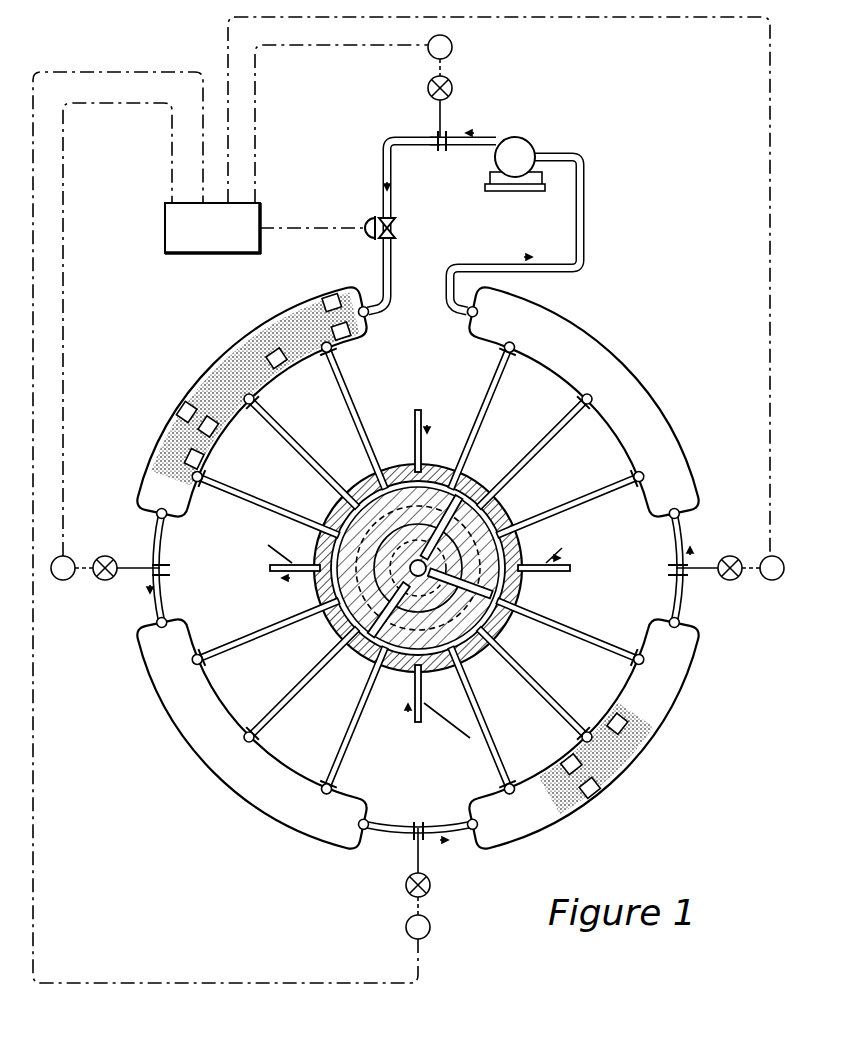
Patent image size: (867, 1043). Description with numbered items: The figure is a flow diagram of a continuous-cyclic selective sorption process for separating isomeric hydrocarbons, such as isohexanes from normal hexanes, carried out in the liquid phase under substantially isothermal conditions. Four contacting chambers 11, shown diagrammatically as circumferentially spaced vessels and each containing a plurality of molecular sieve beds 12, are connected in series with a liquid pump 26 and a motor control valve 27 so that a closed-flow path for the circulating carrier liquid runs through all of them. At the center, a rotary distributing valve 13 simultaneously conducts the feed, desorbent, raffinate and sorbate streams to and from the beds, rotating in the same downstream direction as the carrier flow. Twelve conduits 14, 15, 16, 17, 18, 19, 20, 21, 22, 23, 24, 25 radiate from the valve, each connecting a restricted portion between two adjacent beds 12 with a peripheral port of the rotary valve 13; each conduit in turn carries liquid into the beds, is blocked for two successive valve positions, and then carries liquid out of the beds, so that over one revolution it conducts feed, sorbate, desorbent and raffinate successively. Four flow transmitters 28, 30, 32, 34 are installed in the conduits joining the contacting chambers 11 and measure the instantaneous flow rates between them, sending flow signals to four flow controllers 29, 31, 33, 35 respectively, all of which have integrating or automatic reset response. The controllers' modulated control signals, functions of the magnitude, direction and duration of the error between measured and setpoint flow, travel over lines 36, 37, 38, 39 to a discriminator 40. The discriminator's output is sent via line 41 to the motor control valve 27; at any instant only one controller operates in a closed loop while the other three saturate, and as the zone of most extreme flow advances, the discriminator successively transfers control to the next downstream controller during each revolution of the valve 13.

The contacting chamber 11 is at (417, 568).
The molecular sieve bed 12 is at (418, 553).
The rotary distributing valve 13 is at (411, 572).
The conduit 14 is at (354, 415).
The conduit 15 is at (301, 451).
The conduit 16 is at (265, 504).
The conduit 17 is at (265, 631).
The conduit 18 is at (301, 684).
The conduit 19 is at (350, 720).
The conduit 20 is at (494, 720).
The conduit 21 is at (536, 684).
The conduit 22 is at (570, 631).
The conduit 23 is at (570, 503).
The conduit 24 is at (534, 451).
The conduit 25 is at (480, 415).
The liquid pump 26 is at (482, 212).
The motor control valve 27 is at (385, 226).
The flow transmitter 28 is at (465, 99).
The flow controller 29 is at (463, 51).
The flow transmitter 30 is at (111, 583).
The flow controller 31 is at (86, 552).
The flow transmitter 32 is at (395, 869).
The flow controller 33 is at (440, 930).
The flow transmitter 34 is at (725, 585).
The flow controller 35 is at (756, 550).
The line 36 is at (341, 124).
The line 37 is at (117, 329).
The line 38 is at (225, 524).
The line 39 is at (473, 284).
The discriminator 40 is at (200, 248).
The line 41 is at (313, 245).